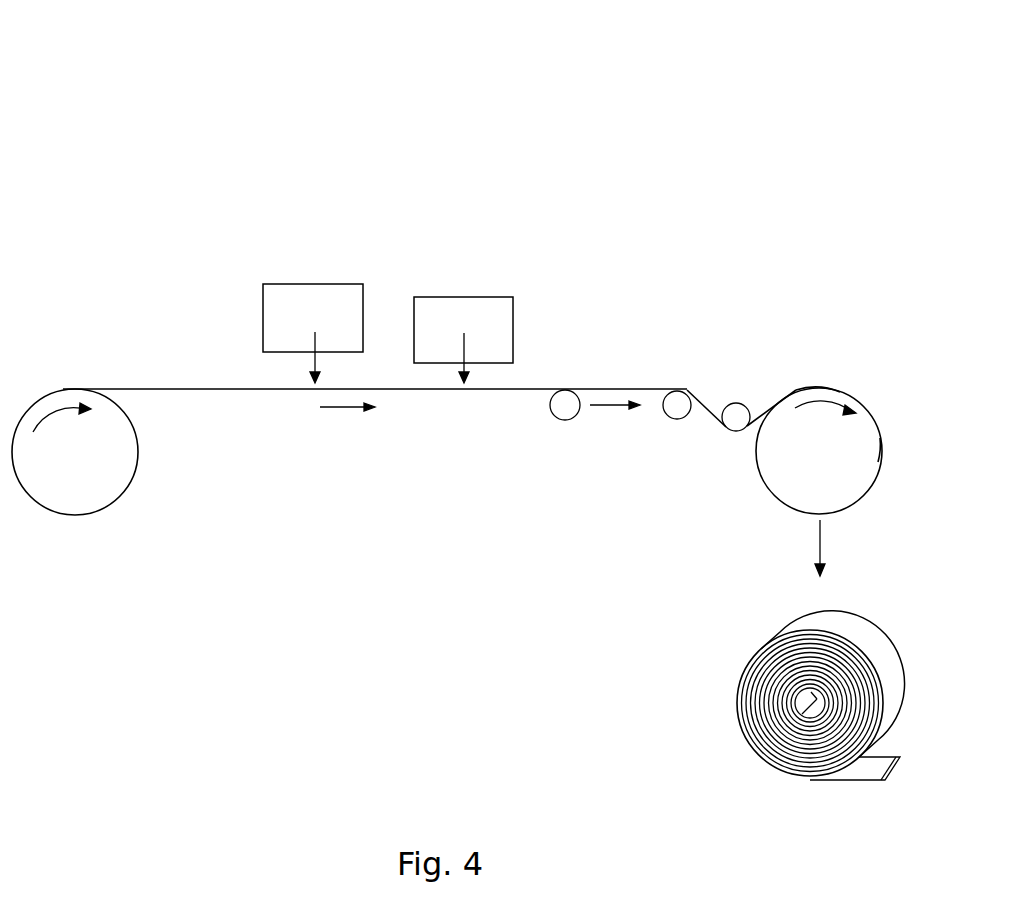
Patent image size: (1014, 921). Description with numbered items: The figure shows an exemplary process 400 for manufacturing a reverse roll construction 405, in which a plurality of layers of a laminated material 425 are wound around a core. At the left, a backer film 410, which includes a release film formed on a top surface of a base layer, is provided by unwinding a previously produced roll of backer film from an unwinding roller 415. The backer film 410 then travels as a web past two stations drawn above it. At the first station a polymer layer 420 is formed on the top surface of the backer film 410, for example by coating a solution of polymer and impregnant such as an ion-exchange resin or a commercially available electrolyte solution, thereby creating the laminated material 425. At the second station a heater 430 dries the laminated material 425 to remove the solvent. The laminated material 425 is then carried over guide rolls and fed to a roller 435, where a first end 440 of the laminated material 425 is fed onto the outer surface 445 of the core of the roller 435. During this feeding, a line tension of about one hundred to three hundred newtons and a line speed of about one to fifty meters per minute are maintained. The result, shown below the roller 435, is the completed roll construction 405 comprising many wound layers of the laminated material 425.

The process 400 is at (185, 97).
The roll construction 405 is at (808, 761).
The backer film 410 is at (125, 387).
The unwinding roller 415 is at (85, 490).
The polymer layer 420 is at (312, 295).
The laminated material 425 is at (502, 391).
The heater 430 is at (459, 308).
The roller 435 is at (848, 480).
The first end 440 is at (800, 386).
The outer surface 445 is at (882, 445).